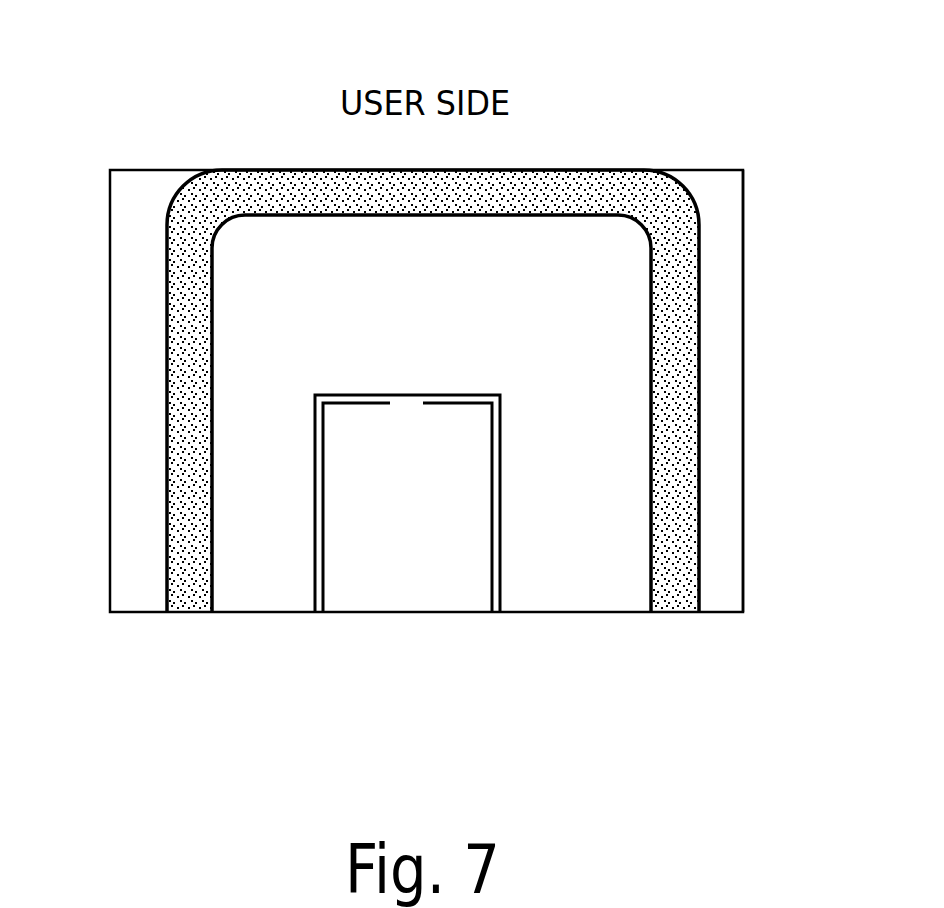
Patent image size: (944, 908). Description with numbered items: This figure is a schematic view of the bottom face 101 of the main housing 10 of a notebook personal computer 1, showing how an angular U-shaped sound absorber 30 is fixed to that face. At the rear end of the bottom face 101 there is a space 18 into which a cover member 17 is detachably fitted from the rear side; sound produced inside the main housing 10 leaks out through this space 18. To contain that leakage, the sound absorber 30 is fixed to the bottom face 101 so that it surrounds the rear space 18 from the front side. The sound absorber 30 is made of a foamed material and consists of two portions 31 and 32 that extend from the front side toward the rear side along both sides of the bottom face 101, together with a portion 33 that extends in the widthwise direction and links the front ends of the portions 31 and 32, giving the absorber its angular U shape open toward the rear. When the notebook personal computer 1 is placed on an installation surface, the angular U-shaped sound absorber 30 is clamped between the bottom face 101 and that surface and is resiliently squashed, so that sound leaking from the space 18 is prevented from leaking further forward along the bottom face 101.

The notebook personal computer 1 is at (806, 119).
The main housing 10 is at (758, 358).
The bottom face 101 is at (720, 451).
The cover member 17 is at (403, 585).
The space 18 is at (490, 572).
The sound absorber 30 is at (716, 264).
The portion of sound absorber 31 is at (175, 518).
The portion of sound absorber 32 is at (700, 527).
The portion of sound absorber 33 is at (597, 175).